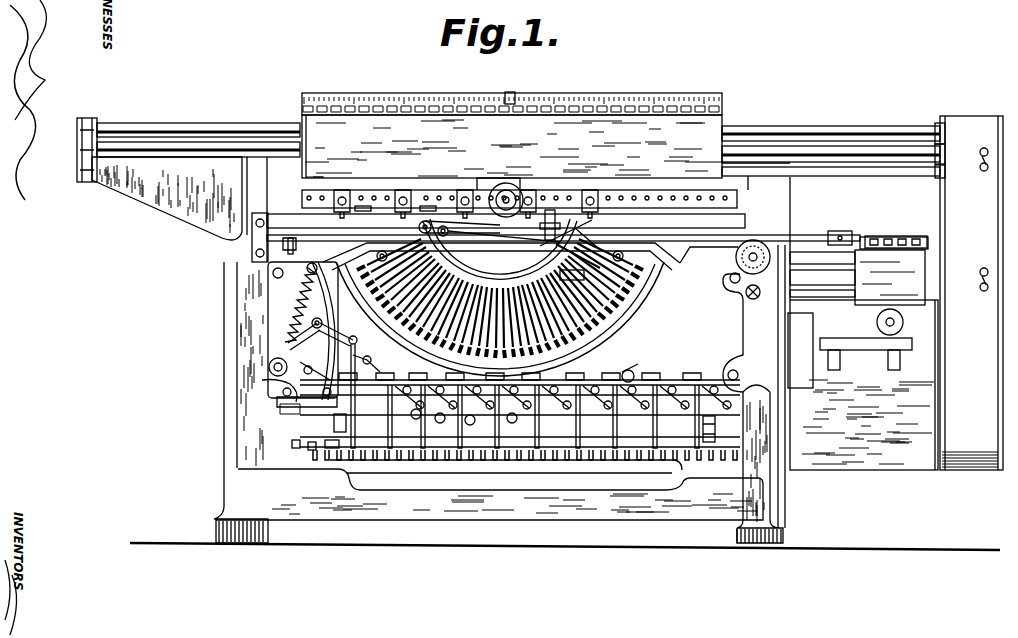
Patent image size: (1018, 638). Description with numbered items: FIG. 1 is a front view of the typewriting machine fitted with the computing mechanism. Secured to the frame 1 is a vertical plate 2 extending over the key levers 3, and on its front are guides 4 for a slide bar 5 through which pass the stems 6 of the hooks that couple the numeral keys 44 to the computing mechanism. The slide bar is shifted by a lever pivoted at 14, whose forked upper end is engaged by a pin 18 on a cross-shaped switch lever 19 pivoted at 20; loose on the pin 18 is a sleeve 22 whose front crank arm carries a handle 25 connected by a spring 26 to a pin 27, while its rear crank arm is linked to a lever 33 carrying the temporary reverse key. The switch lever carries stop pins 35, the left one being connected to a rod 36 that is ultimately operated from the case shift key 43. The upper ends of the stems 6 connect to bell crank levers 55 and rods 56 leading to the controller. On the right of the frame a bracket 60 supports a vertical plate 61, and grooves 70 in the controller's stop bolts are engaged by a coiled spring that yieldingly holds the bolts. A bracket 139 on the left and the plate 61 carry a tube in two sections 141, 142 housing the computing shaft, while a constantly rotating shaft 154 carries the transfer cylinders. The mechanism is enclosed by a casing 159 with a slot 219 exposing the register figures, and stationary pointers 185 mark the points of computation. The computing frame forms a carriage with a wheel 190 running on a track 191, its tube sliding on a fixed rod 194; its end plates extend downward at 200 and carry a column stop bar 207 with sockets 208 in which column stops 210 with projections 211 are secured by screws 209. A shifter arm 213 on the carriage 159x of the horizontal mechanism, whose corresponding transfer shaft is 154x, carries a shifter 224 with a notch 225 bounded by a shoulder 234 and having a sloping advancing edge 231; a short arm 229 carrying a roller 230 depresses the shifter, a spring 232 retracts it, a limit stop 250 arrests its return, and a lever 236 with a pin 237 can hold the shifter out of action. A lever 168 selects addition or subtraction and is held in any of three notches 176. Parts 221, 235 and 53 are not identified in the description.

The frame 1 is at (224, 301).
The bracket 139 is at (78, 156).
The fixed rod 194 is at (215, 123).
The tube section 141 is at (190, 157).
The shaft 154 is at (880, 176).
The tube section 142 is at (822, 165).
The slot 219 is at (445, 116).
The stationary pointers 185 is at (515, 94).
The casing 159 is at (512, 146).
The downward extensions 200 is at (302, 196).
The track 191 is at (300, 218).
The shifter arm 213 is at (682, 235).
The sockets 208 is at (314, 196).
The column stop bar 207 is at (396, 196).
The column stop 210 is at (458, 196).
The screw 209 is at (390, 206).
The projection 211 is at (456, 206).
The pin 237 is at (595, 212).
The wheel 190 is at (492, 188).
The notch 225 is at (550, 224).
The shoulder 234 is at (463, 229).
The link 235 is at (518, 234).
The roller 230 is at (501, 309).
The short arm 229 is at (396, 260).
The lever 236 is at (605, 258).
The sloping advancing edge 231 is at (500, 249).
The shifter 224 is at (500, 298).
The limit stop 250 is at (567, 257).
The plate 221 is at (576, 280).
The spring 232 is at (725, 316).
The rods 56 is at (728, 372).
The spring 26 is at (298, 298).
The pin 27 is at (316, 262).
The rod 36 is at (290, 244).
The stop pins 35 is at (288, 340).
The cross-shaped switch lever 19 is at (340, 340).
The vertical plate 2 is at (366, 353).
The handle 25 is at (270, 362).
The sleeve 22 is at (275, 385).
The pivot 20 is at (317, 371).
The bell crank levers 55 is at (328, 397).
The guides 4 is at (340, 413).
The numeral keys 44 is at (354, 430).
The case shift key 43 is at (290, 446).
The lever 33 is at (312, 450).
The key levers 3 is at (520, 410).
The slide bar 5 is at (409, 409).
The stems 6 is at (422, 406).
The pin 18 is at (475, 421).
The pivot 53 is at (633, 363).
The pivot 14 is at (720, 428).
The grooves 70 is at (525, 463).
The carriage of horizontal computing mechanism 159x is at (859, 271).
The shaft of secondary computing mechanism 154x is at (850, 316).
The bracket 60 is at (864, 323).
The vertical plate 61 is at (938, 408).
The lever 168 is at (986, 150).
The notches 176 is at (984, 170).